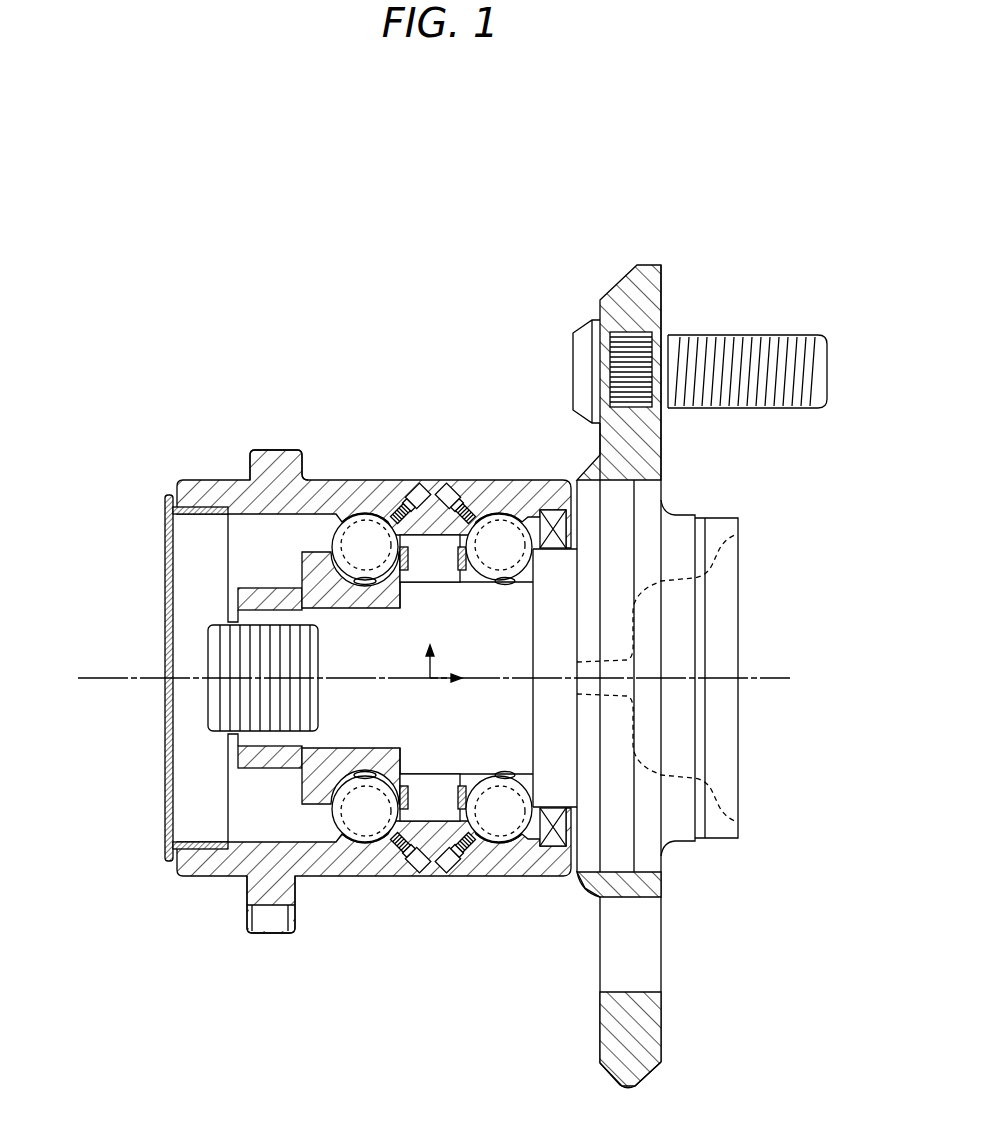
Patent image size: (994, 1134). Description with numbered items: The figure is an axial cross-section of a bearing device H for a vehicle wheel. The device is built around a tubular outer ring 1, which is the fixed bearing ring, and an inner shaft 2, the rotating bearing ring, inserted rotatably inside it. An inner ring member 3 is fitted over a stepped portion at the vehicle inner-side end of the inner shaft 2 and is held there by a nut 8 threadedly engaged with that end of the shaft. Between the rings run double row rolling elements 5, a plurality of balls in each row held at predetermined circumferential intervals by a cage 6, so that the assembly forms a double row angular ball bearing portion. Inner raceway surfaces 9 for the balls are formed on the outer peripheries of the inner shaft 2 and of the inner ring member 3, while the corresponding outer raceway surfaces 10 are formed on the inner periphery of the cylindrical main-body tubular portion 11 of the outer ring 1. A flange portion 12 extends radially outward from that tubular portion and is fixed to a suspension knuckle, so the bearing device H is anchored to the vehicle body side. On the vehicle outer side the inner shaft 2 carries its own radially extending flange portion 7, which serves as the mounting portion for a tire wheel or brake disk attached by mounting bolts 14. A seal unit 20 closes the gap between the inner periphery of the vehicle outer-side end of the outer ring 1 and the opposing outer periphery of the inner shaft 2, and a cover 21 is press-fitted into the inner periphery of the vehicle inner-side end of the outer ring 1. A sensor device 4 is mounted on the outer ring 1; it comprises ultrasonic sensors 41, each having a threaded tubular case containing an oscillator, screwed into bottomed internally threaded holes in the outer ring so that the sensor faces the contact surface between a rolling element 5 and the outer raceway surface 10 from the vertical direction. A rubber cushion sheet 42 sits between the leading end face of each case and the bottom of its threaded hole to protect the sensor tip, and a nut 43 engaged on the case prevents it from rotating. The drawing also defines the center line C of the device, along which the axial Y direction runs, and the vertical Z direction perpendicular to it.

The bearing device H is at (355, 290).
The outer ring 1 is at (319, 482).
The inner shaft 2 is at (292, 587).
The inner ring member 3 is at (322, 552).
The sensor device 4 is at (443, 646).
The rolling elements 5 is at (382, 514).
The cage 6 is at (401, 812).
The flange portion 7 is at (653, 290).
The nut 8 is at (240, 593).
The inner raceway surfaces 9 is at (378, 585).
The outer raceway surfaces 10 is at (368, 517).
The main-body tubular portion 11 is at (540, 500).
The flange portion 12 is at (280, 457).
The mounting bolts 14 is at (762, 345).
The seal unit 20 is at (551, 510).
The cover 21 is at (170, 517).
The ultrasonic sensors 41 is at (400, 505).
The cushion sheet 42 is at (444, 560).
The sensor body 43 is at (425, 490).
The center line C is at (745, 676).
The Z-axis direction Z is at (430, 649).
The Y-axis direction Y is at (452, 688).